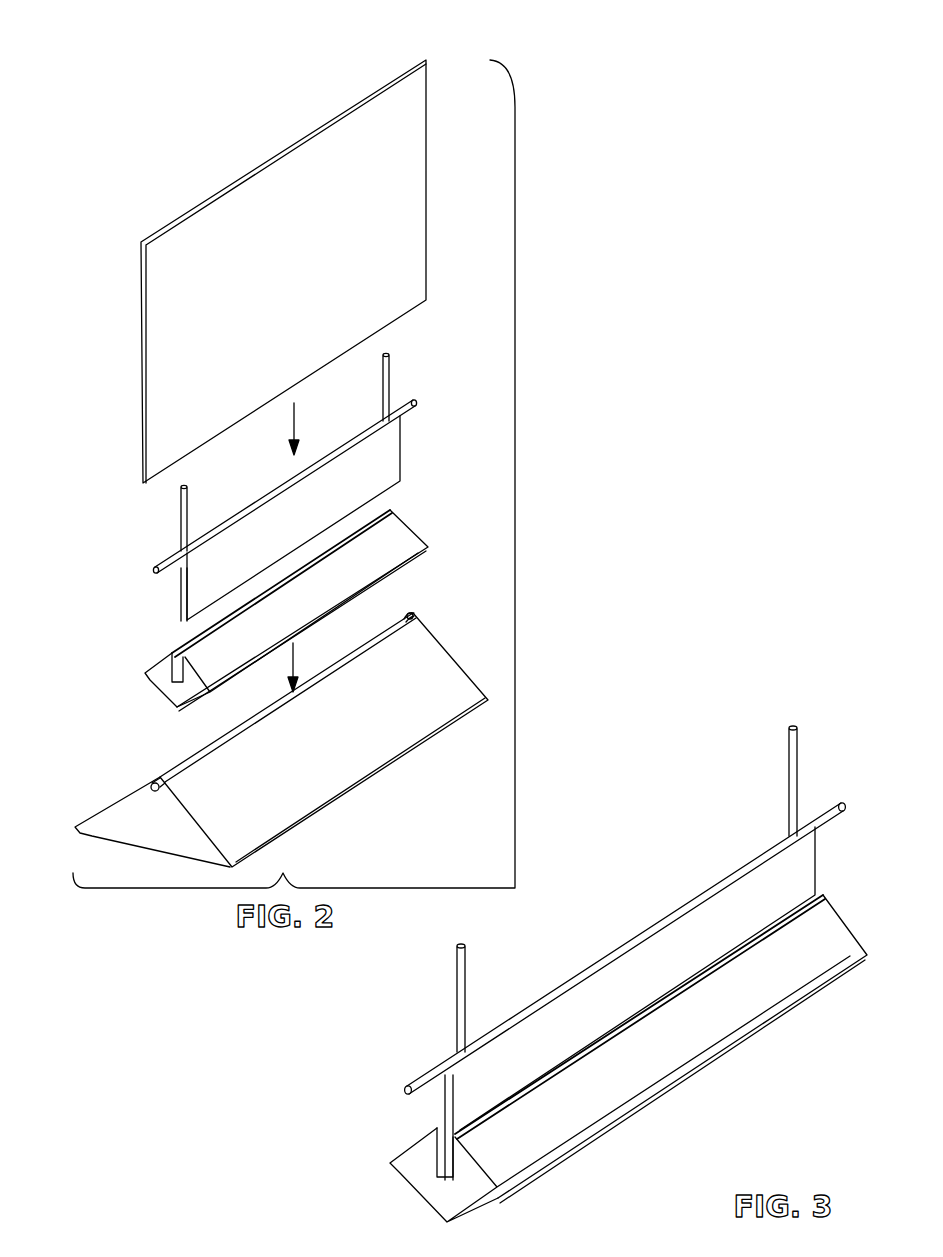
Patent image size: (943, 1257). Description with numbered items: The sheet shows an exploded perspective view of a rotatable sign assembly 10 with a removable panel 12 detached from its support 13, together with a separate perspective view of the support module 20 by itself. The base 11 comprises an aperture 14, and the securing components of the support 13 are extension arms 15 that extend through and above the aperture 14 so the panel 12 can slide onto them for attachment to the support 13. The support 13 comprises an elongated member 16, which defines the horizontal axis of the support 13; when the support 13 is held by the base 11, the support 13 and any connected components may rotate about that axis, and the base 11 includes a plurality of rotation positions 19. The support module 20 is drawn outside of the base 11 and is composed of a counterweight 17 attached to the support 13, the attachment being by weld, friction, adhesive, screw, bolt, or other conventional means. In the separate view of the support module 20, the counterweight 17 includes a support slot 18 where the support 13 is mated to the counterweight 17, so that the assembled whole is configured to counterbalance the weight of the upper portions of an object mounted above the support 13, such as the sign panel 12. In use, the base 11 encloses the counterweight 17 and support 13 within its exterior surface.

In FIG. 2, the display assembly 10 is at (148, 156).
In FIG. 2, the base 11 is at (281, 723).
In FIG. 2, the panel 12 is at (415, 122).
In FIG. 2, the support 13 is at (393, 463).
In FIG. 3, the support 13 is at (809, 864).
In FIG. 2, the aperture 14 is at (210, 748).
In FIG. 2, the extension arms 15 is at (390, 380).
In FIG. 3, the extension arms 15 is at (798, 755).
In FIG. 2, the elongated member 16 is at (416, 407).
In FIG. 3, the elongated member 16 is at (847, 808).
In FIG. 2, the counterweight 17 is at (299, 622).
In FIG. 3, the counterweight 17 is at (641, 1066).
In FIG. 2, the support slot 18 is at (177, 670).
In FIG. 3, the support slot 18 is at (438, 1180).
In FIG. 2, the rotation positions 19 is at (152, 784).
In FIG. 2, the support module 20 is at (130, 505).
In FIG. 3, the support module 20 is at (378, 1022).